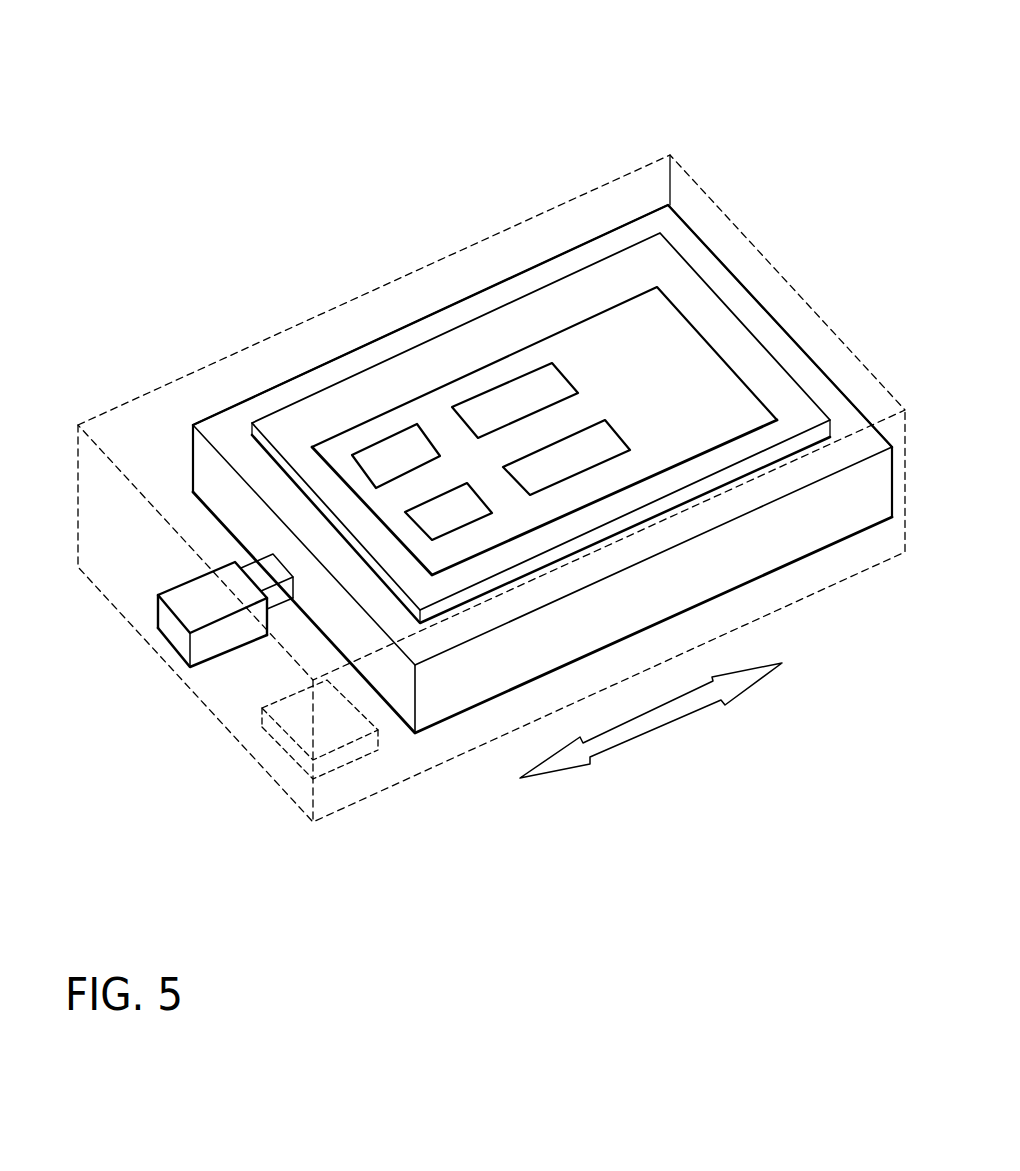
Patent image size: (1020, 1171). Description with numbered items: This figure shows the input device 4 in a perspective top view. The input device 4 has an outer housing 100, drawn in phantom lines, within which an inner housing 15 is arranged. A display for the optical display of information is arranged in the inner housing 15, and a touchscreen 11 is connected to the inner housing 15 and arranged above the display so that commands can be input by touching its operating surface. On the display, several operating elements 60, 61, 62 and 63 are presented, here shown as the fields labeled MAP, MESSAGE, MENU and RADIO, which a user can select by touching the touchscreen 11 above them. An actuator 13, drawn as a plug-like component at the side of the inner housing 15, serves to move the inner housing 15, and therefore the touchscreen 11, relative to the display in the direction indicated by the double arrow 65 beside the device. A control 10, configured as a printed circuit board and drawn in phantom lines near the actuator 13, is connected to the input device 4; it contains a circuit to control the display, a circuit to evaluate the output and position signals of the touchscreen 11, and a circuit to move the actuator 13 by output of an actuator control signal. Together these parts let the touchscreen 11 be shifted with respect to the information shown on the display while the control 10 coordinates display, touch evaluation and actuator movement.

The input device 4 is at (724, 166).
The control 10 is at (280, 716).
The touchscreen 11 is at (462, 353).
The actuator 13 is at (175, 598).
The inner housing 15 is at (715, 272).
The operating element 60 is at (363, 457).
The operating element 61 is at (550, 370).
The operating element 62 is at (618, 448).
The operating element 63 is at (435, 533).
The double arrow 65 is at (647, 722).
The housing 100 is at (173, 382).